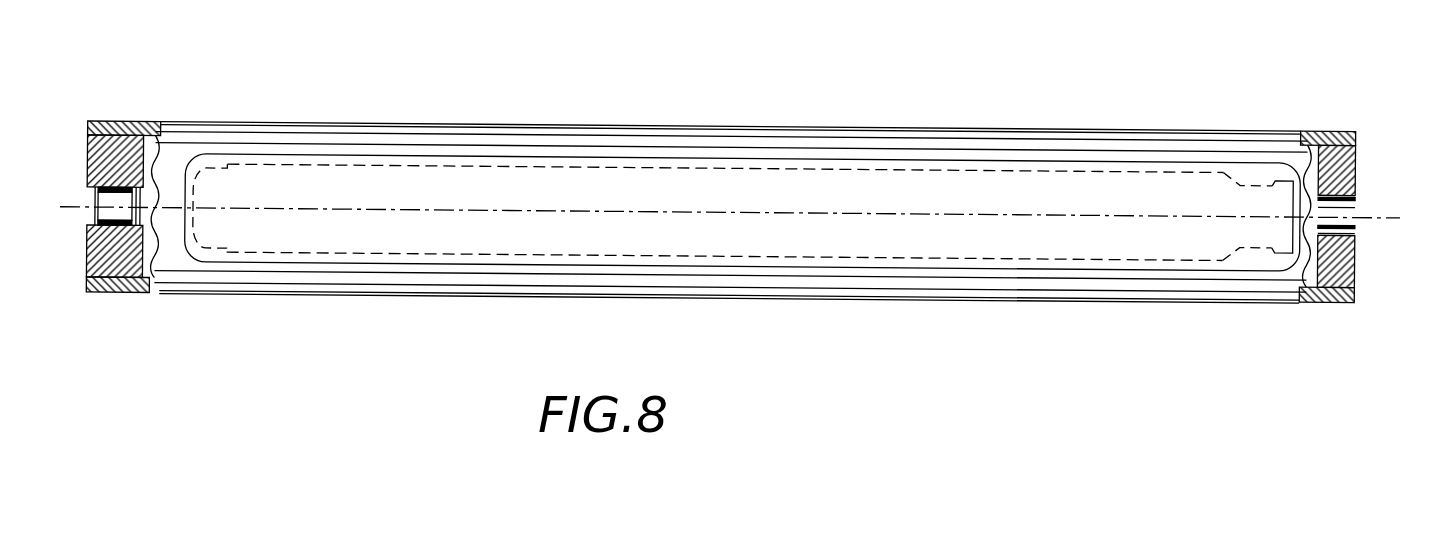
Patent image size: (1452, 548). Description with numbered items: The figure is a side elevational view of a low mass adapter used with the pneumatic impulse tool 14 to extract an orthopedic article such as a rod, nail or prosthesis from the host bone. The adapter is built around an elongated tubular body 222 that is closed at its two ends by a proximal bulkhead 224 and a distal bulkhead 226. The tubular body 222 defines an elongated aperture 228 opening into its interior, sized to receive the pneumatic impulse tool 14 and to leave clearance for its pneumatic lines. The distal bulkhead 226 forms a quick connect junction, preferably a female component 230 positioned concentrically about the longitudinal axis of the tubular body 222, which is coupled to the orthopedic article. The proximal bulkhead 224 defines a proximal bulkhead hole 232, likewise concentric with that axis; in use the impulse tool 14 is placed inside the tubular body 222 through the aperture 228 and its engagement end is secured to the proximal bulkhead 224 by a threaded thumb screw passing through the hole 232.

The pneumatic impulse tool 14 is at (800, 230).
The tubular body 222 is at (238, 137).
The proximal bulkhead 224 is at (1332, 277).
The distal bulkhead 226 is at (88, 250).
The elongated aperture 228 is at (463, 157).
The female component 230 is at (88, 203).
The proximal bulkhead hole 232 is at (1357, 212).